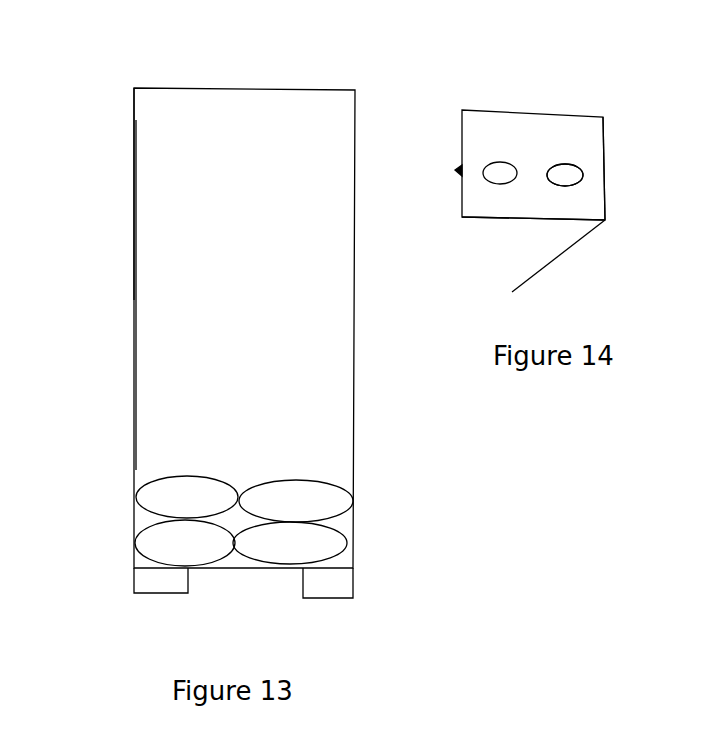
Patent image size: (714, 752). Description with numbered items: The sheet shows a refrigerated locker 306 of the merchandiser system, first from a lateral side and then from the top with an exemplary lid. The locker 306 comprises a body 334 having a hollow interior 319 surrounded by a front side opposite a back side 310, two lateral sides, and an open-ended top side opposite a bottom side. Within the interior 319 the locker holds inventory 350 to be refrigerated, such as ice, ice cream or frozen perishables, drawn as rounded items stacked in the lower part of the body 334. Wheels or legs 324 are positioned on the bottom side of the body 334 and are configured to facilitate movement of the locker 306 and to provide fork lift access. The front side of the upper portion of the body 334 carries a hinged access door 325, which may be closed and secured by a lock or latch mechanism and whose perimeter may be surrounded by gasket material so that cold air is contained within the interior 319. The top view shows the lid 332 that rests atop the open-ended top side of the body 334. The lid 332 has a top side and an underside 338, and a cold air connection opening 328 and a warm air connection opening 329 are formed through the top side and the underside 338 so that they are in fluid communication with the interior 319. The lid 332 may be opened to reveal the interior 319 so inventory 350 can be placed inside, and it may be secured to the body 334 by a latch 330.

In FIG. 13, the locker 306 is at (322, 70).
In FIG. 14, the locker 306 is at (499, 84).
In FIG. 13, the body 334 is at (128, 154).
In FIG. 13, the back side 310 is at (170, 288).
In FIG. 13, the inventory 350 is at (333, 500).
In FIG. 13, the wheels or legs 324 is at (337, 587).
In FIG. 14, the cold air connection opening 328 is at (500, 163).
In FIG. 14, the warm air connection opening 329 is at (579, 156).
In FIG. 14, the lid 332 is at (590, 163).
In FIG. 14, the hollow interior 319 is at (572, 175).
In FIG. 14, the underside 338 is at (605, 208).
In FIG. 14, the access door 325 is at (558, 270).
In FIG. 14, the latch 330 is at (450, 189).